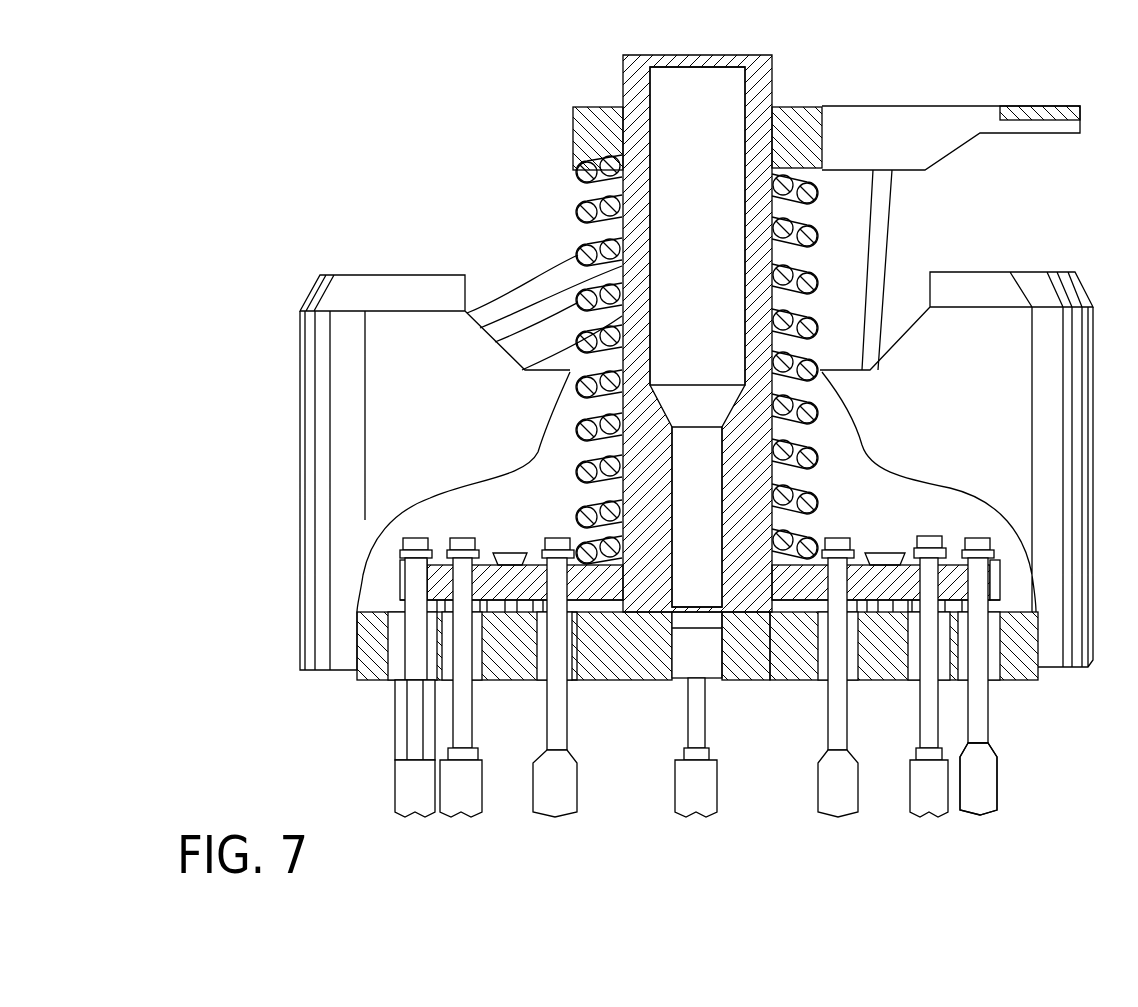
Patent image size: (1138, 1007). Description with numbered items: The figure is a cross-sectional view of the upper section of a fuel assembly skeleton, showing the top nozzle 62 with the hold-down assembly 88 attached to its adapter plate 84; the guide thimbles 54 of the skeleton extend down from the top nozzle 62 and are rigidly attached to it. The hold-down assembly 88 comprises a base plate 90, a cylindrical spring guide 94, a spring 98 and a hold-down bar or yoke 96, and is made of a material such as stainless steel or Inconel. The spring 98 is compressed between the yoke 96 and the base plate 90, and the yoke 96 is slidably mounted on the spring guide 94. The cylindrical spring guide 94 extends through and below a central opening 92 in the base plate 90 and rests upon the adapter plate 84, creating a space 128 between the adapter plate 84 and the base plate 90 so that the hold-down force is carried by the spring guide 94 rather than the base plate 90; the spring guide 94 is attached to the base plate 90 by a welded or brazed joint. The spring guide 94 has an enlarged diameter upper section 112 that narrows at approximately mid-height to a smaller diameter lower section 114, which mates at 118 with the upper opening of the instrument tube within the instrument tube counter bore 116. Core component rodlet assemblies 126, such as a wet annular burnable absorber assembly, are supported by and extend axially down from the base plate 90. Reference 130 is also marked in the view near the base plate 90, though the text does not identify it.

The guide thimbles 54 is at (395, 700).
The top nozzle 62 is at (298, 588).
The adapter plate 84 is at (743, 680).
The hold-down assembly 88 is at (838, 88).
The base plate 90 is at (943, 583).
The central opening 92 is at (622, 565).
The cylindrical spring guide 94 is at (762, 83).
The yoke 96 is at (1032, 106).
The spring 98 is at (790, 212).
The enlarged diameter upper section 112 is at (677, 290).
The smaller diameter lower section 114 is at (687, 450).
The instrument tube counter bore 116 is at (682, 673).
The mating location 118 is at (760, 680).
The core component rodlet assemblies 126 is at (705, 793).
The space 128 is at (598, 677).
The spring seat 130 is at (800, 525).